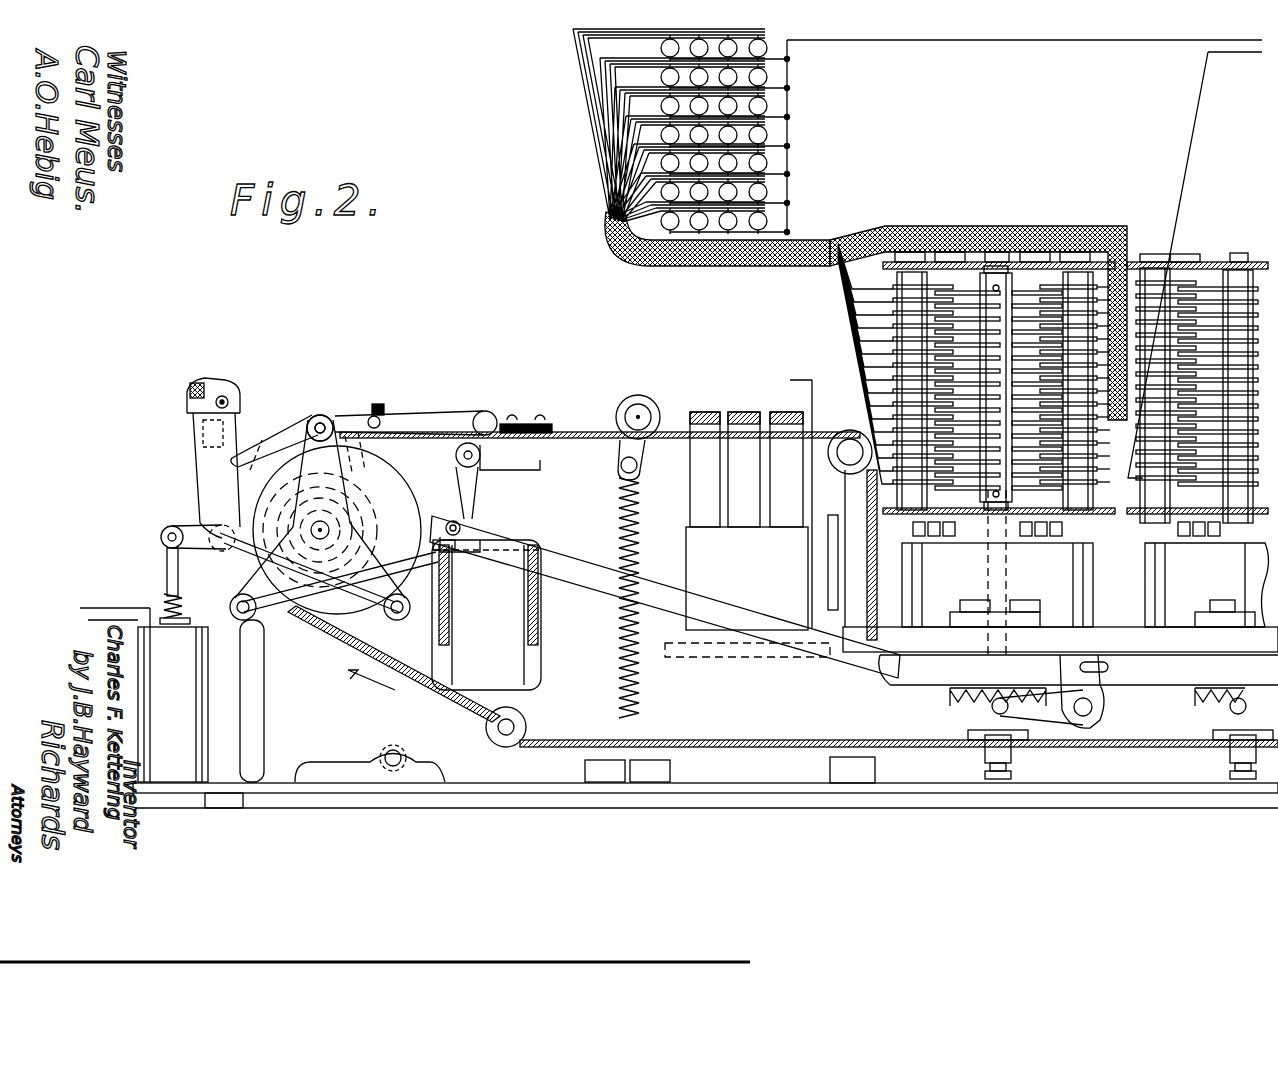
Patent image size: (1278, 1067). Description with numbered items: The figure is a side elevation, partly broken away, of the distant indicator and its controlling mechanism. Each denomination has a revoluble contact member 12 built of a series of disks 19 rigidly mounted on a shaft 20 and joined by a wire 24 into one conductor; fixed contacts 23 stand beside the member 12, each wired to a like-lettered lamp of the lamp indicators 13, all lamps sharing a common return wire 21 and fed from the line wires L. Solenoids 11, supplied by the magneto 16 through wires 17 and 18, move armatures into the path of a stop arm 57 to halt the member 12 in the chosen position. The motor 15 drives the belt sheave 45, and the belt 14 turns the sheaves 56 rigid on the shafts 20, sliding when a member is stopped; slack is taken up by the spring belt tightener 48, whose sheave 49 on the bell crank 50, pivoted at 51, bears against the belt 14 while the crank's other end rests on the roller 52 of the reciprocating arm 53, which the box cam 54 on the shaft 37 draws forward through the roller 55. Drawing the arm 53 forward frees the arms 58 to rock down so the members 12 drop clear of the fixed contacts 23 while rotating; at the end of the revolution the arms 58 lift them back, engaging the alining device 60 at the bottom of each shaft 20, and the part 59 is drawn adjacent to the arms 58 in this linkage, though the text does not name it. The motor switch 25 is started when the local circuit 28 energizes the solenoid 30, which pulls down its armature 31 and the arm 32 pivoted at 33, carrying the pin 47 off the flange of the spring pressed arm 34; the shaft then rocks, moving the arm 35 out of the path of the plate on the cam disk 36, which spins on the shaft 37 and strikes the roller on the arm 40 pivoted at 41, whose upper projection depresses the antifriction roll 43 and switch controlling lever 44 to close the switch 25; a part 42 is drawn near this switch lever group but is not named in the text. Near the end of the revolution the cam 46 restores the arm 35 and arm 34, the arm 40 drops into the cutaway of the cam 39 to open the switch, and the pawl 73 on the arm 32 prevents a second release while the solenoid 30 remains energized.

The solenoids 11 is at (1180, 540).
The revoluble contact members 12 is at (976, 484).
The lamp indicators 13 is at (770, 140).
The belt 14 is at (1075, 747).
The motor 15 is at (540, 635).
The magneto 16 is at (700, 493).
The wire 17 is at (870, 588).
The wire 18 is at (812, 384).
The disks 19 is at (1015, 290).
The shafts 20 is at (988, 568).
The common return wire 21 is at (1030, 40).
The fixed contacts 23 is at (905, 268).
The wire 24 is at (1040, 300).
The motor switch 25 is at (342, 425).
The local circuit 28 is at (120, 607).
The solenoid 30 is at (173, 704).
The armature 31 is at (165, 566).
The arm 32 is at (193, 497).
The pivot 33 is at (190, 526).
The spring pressed arm 34 is at (290, 412).
The arm 35 is at (195, 478).
The cam disk 36 is at (235, 566).
The shaft 37 is at (325, 518).
The cam 39 is at (460, 490).
The arm 40 is at (420, 412).
The pivot 41 is at (492, 413).
The link 42 is at (363, 420).
The antifriction roll 43 is at (332, 438).
The switch controlling lever 44 is at (378, 405).
The belt sheave 45 is at (360, 618).
The cam 46 is at (345, 580).
The pin 47 is at (193, 440).
The spring belt tightener 48 is at (645, 690).
The sheave 49 is at (645, 400).
The bell crank 50 is at (578, 455).
The pivot 51 is at (483, 455).
The roller 52 is at (460, 552).
The reciprocating arm 53 is at (718, 620).
The box cam 54 is at (450, 560).
The roller 55 is at (452, 548).
The sheaves 56 is at (975, 750).
The stop arm 57 is at (1060, 517).
The arms 58 is at (1100, 700).
The slot 59 is at (1105, 665).
The alining device 60 is at (950, 698).
The pawl 73 is at (205, 378).
The line wires L is at (1195, 255).